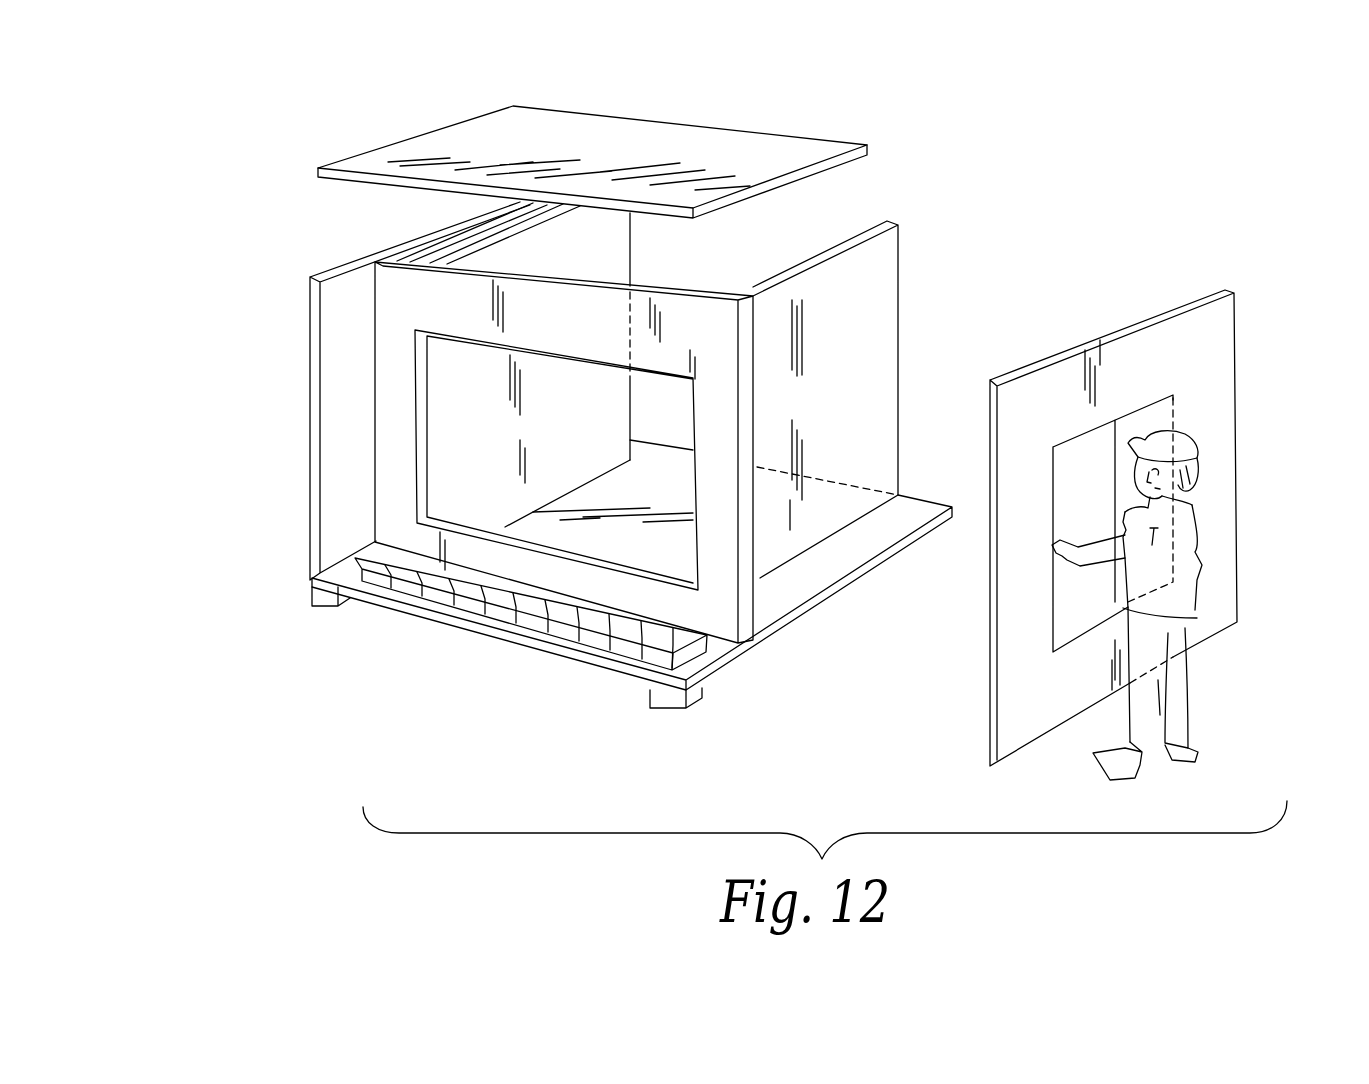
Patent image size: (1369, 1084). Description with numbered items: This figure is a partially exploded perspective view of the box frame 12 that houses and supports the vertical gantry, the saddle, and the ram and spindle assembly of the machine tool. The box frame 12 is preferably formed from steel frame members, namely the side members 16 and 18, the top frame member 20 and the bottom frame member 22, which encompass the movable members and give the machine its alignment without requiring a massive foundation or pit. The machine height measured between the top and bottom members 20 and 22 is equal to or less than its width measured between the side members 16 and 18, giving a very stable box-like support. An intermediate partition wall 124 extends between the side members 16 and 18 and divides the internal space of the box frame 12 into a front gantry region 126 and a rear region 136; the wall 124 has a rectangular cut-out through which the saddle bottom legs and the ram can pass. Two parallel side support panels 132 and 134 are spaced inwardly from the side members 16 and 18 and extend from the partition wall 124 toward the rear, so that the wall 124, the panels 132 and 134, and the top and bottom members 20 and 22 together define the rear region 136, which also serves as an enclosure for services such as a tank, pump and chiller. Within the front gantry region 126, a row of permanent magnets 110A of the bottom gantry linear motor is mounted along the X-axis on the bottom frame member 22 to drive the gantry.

The box frame 12 is at (232, 160).
The top frame member 20 is at (795, 144).
The rear region 136 is at (767, 245).
The intermediate partition wall 124 is at (393, 272).
The front gantry region 126 is at (383, 510).
The side support panel 132 is at (603, 237).
The side support panel 134 is at (890, 297).
The side frame member 16 is at (327, 365).
The side frame member 18 is at (1217, 342).
The bottom frame member 22 is at (812, 578).
The row of permanent magnets 110A is at (528, 618).